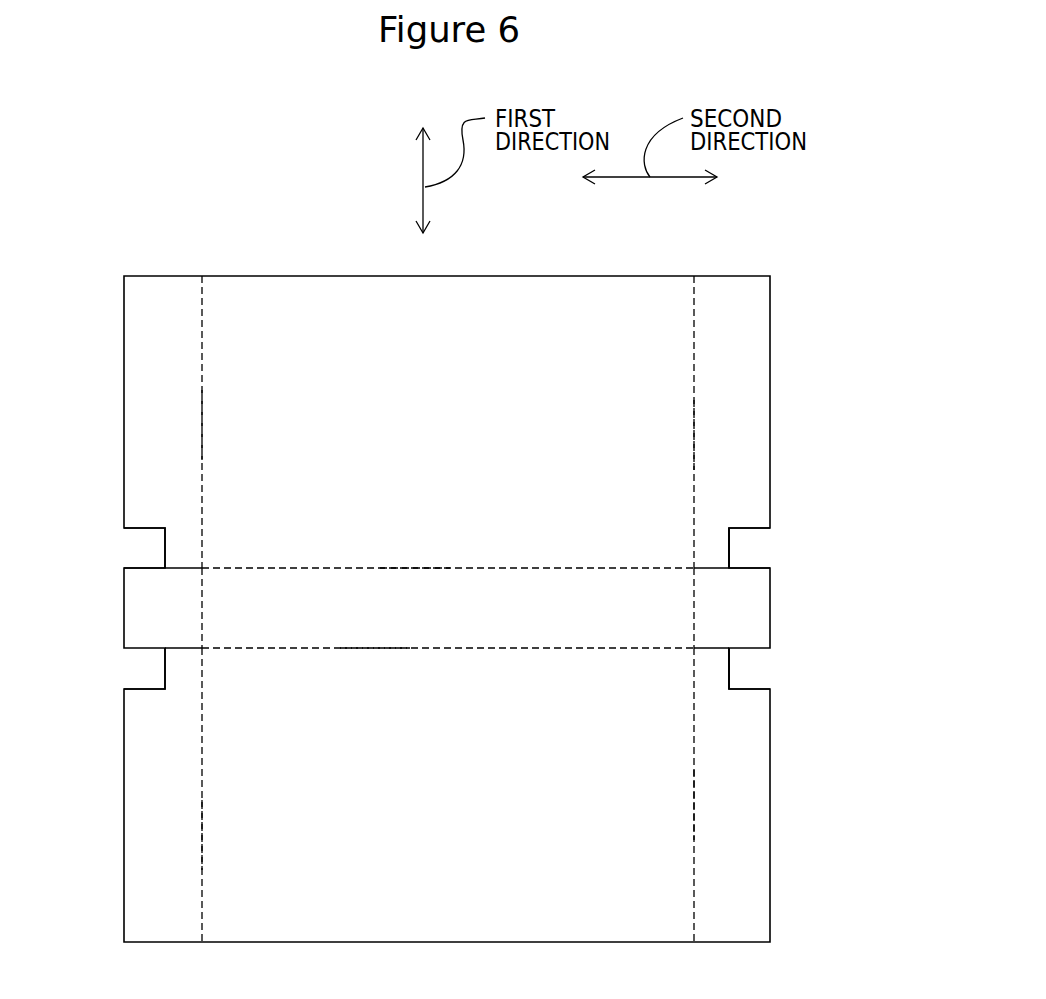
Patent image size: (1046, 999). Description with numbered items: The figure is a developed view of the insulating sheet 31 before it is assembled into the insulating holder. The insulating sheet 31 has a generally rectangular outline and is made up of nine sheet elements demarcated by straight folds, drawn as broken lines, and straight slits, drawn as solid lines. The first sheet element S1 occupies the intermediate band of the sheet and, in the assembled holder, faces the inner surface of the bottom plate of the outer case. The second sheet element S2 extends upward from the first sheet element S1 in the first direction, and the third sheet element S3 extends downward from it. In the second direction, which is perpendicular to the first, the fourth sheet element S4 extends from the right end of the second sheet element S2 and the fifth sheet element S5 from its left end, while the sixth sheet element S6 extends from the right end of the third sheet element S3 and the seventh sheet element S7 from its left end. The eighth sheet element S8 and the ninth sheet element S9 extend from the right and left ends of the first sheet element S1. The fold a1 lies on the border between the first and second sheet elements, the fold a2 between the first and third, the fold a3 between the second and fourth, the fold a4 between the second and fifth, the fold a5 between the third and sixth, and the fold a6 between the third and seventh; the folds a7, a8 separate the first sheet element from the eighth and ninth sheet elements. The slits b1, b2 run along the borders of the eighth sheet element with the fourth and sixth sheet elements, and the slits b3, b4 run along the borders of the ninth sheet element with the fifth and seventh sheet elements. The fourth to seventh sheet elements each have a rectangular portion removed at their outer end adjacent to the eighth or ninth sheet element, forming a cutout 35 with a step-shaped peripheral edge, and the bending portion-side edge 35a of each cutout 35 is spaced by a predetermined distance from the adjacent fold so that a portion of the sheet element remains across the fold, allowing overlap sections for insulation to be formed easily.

The insulating sheet 31 is at (766, 244).
The cutout 35 is at (145, 688).
The bending portion-side edge 35a is at (728, 543).
The first sheet element S1 is at (460, 628).
The second sheet element S2 is at (450, 424).
The third sheet element S3 is at (475, 828).
The fourth sheet element S4 is at (746, 391).
The fifth sheet element S5 is at (178, 384).
The sixth sheet element S6 is at (748, 816).
The seventh sheet element S7 is at (176, 836).
The eighth sheet element S8 is at (752, 592).
The ninth sheet element S9 is at (146, 603).
The fold a1 is at (413, 567).
The fold a2 is at (375, 648).
The fold a3 is at (694, 430).
The fold a4 is at (201, 423).
The fold a5 is at (694, 800).
The fold a6 is at (202, 835).
The fold a7 is at (694, 590).
The fold a8 is at (203, 617).
The slit b1 is at (708, 569).
The slit b2 is at (712, 650).
The slit b3 is at (180, 566).
The slit b4 is at (176, 650).